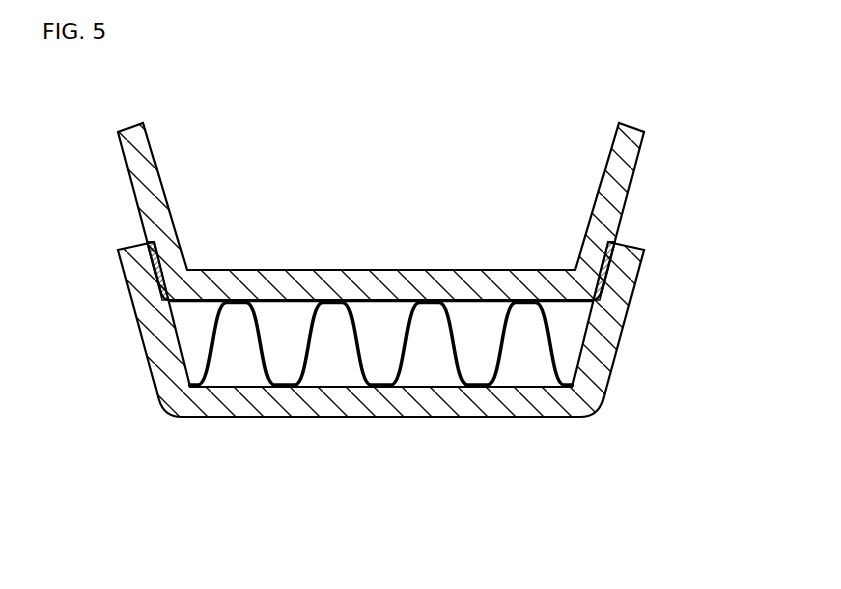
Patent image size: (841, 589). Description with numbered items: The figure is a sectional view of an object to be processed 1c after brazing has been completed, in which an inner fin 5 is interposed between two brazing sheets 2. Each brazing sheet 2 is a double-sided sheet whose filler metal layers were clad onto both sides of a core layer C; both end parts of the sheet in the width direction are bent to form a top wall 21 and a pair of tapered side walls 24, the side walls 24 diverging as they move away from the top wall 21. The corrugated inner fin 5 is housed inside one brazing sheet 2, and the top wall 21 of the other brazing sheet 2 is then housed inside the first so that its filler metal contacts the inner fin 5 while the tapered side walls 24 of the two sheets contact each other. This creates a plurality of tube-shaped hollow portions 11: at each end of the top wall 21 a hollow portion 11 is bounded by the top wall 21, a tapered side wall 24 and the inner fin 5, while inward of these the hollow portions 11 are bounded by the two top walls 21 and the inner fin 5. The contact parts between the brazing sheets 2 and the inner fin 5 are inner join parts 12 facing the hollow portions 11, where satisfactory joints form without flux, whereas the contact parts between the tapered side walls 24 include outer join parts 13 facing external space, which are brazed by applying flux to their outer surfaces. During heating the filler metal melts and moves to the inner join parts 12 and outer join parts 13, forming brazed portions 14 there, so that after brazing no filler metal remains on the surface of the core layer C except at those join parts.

The object to be processed 1c is at (492, 112).
The brazing sheet 2 is at (383, 324).
The inner fin 5 is at (381, 346).
The hollow portion 11 is at (118, 447).
The inner join part 12 is at (170, 305).
The outer join part 13 is at (622, 237).
The brazed portion 14 is at (253, 298).
The top wall 21 is at (307, 287).
The tapered side wall 24 is at (140, 167).
The core layer C is at (150, 180).